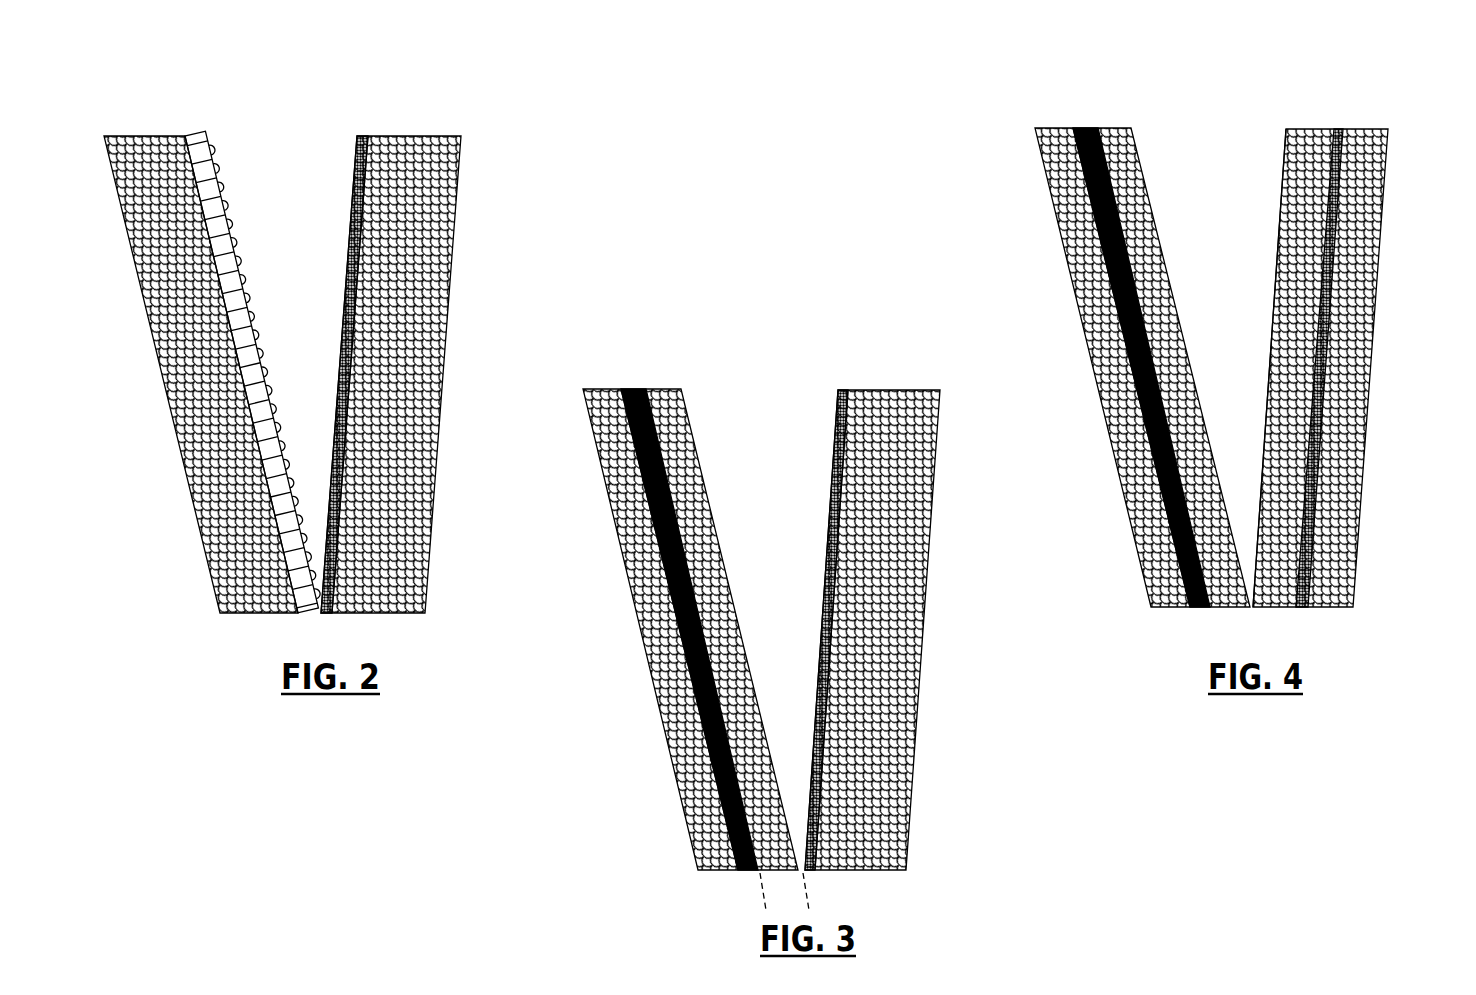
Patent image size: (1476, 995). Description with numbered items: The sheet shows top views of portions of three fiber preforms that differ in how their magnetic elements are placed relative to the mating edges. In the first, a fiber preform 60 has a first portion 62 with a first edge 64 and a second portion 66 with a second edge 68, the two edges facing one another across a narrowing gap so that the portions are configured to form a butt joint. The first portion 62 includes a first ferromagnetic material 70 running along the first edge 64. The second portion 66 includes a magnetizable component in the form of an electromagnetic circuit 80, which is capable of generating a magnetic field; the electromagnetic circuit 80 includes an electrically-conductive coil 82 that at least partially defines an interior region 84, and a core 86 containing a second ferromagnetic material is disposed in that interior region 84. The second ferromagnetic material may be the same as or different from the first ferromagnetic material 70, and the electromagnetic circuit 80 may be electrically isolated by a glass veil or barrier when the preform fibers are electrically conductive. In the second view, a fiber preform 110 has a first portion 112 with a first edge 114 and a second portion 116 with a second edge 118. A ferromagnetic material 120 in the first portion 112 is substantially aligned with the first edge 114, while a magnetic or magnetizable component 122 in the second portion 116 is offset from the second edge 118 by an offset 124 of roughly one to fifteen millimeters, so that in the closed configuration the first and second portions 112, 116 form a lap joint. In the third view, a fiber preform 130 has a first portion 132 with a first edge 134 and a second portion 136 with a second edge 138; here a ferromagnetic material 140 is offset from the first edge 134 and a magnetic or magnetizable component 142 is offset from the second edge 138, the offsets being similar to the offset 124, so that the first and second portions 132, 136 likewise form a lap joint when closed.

In FIG. 2, the fiber preform 60 is at (475, 105).
In FIG. 2, the first portion 62 is at (378, 160).
In FIG. 2, the first edge 64 is at (348, 162).
In FIG. 2, the second portion 66 is at (154, 148).
In FIG. 2, the second edge 68 is at (205, 138).
In FIG. 2, the first ferromagnetic material 70 is at (347, 248).
In FIG. 2, the electromagnetic circuit 80 is at (215, 198).
In FIG. 2, the electrically-conductive coil 82 is at (197, 128).
In FIG. 2, the interior region 84 is at (251, 372).
In FIG. 2, the core 86 is at (252, 374).
In FIG. 3, the fiber preform 110 is at (947, 385).
In FIG. 3, the first portion 112 is at (857, 416).
In FIG. 3, the first edge 114 is at (828, 419).
In FIG. 3, the second portion 116 is at (600, 396).
In FIG. 3, the second edge 118 is at (677, 400).
In FIG. 3, the ferromagnetic material 120 is at (827, 502).
In FIG. 3, the magnetic or magnetizable component 122 is at (656, 582).
In FIG. 3, the offset 124 is at (832, 877).
In FIG. 4, the fiber preform 130 is at (975, 105).
In FIG. 4, the first portion 132 is at (1356, 167).
In FIG. 4, the first edge 134 is at (1276, 166).
In FIG. 4, the second portion 136 is at (1055, 145).
In FIG. 4, the second edge 138 is at (1131, 150).
In FIG. 4, the ferromagnetic material 140 is at (1318, 240).
In FIG. 4, the magnetic or magnetizable component 142 is at (1096, 257).